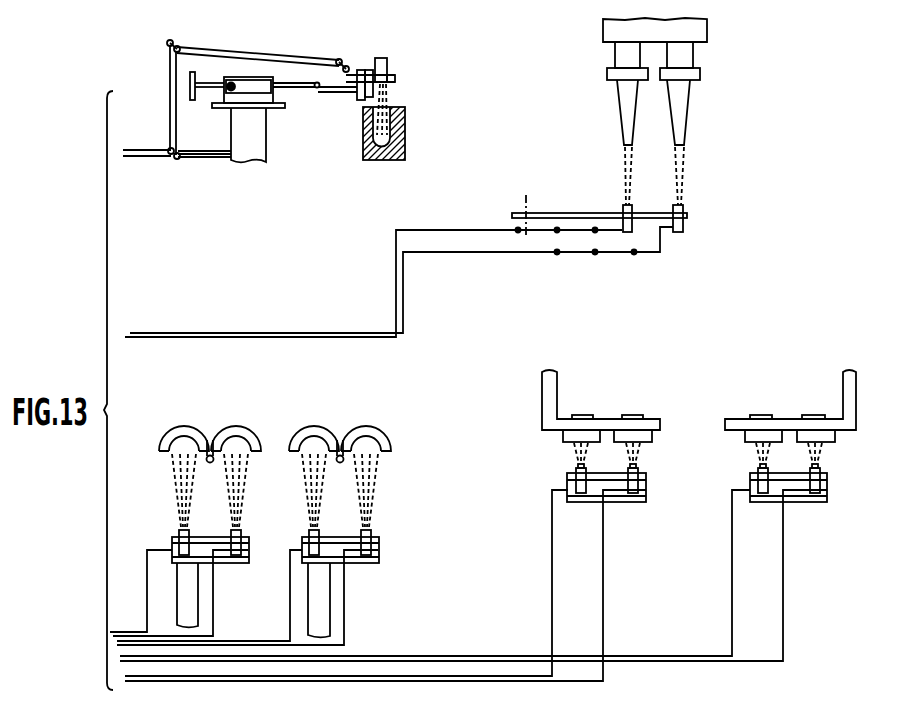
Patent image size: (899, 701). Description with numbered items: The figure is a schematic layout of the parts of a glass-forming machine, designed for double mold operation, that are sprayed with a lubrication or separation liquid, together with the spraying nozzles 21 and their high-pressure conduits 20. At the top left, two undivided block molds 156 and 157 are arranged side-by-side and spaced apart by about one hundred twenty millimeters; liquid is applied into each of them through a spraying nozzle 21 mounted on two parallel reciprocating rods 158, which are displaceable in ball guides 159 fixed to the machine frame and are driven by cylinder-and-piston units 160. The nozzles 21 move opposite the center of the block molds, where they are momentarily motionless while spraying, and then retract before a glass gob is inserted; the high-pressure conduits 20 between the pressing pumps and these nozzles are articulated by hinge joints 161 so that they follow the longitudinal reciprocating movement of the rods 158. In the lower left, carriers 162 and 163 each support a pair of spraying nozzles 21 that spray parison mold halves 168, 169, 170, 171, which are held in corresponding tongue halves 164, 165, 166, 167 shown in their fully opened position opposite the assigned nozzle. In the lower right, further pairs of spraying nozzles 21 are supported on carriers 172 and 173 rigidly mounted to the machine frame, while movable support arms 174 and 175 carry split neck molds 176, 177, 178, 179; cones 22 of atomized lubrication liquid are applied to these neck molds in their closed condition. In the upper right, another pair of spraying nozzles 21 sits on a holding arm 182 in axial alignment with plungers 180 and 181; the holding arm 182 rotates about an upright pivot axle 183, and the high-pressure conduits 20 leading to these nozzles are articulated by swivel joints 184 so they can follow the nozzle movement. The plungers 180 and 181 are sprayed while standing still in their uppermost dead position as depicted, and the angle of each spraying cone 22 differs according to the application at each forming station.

The high-pressure conduit 20 is at (143, 156).
The spraying nozzle 21 is at (377, 58).
The spraying cone 22 is at (390, 98).
The block mold 156 is at (405, 152).
The block mold 157 is at (362, 150).
The reciprocating rod 158 is at (357, 90).
The ball guide 159 is at (236, 76).
The cylinder-and-piston unit 160 is at (252, 80).
The hinge joint 161 is at (172, 43).
The carrier 162 is at (233, 565).
The carrier 163 is at (358, 565).
The tongue half 164 is at (166, 432).
The tongue half 165 is at (243, 432).
The tongue half 166 is at (297, 432).
The tongue half 167 is at (370, 432).
The parison mold half 168 is at (185, 432).
The parison mold half 169 is at (225, 430).
The parison mold half 170 is at (318, 432).
The parison mold half 171 is at (357, 430).
The carrier 172 is at (582, 503).
The carrier 173 is at (762, 503).
The movable support arm 174 is at (541, 404).
The movable support arm 175 is at (857, 396).
The split neck mold 176 is at (563, 437).
The split neck mold 177 is at (652, 437).
The split neck mold 178 is at (745, 437).
The split neck mold 179 is at (835, 437).
The plunger 180 is at (624, 117).
The plunger 181 is at (688, 122).
The holding arm 182 is at (558, 212).
The upright pivot axle 183 is at (523, 199).
The swivel joint 184 is at (556, 232).